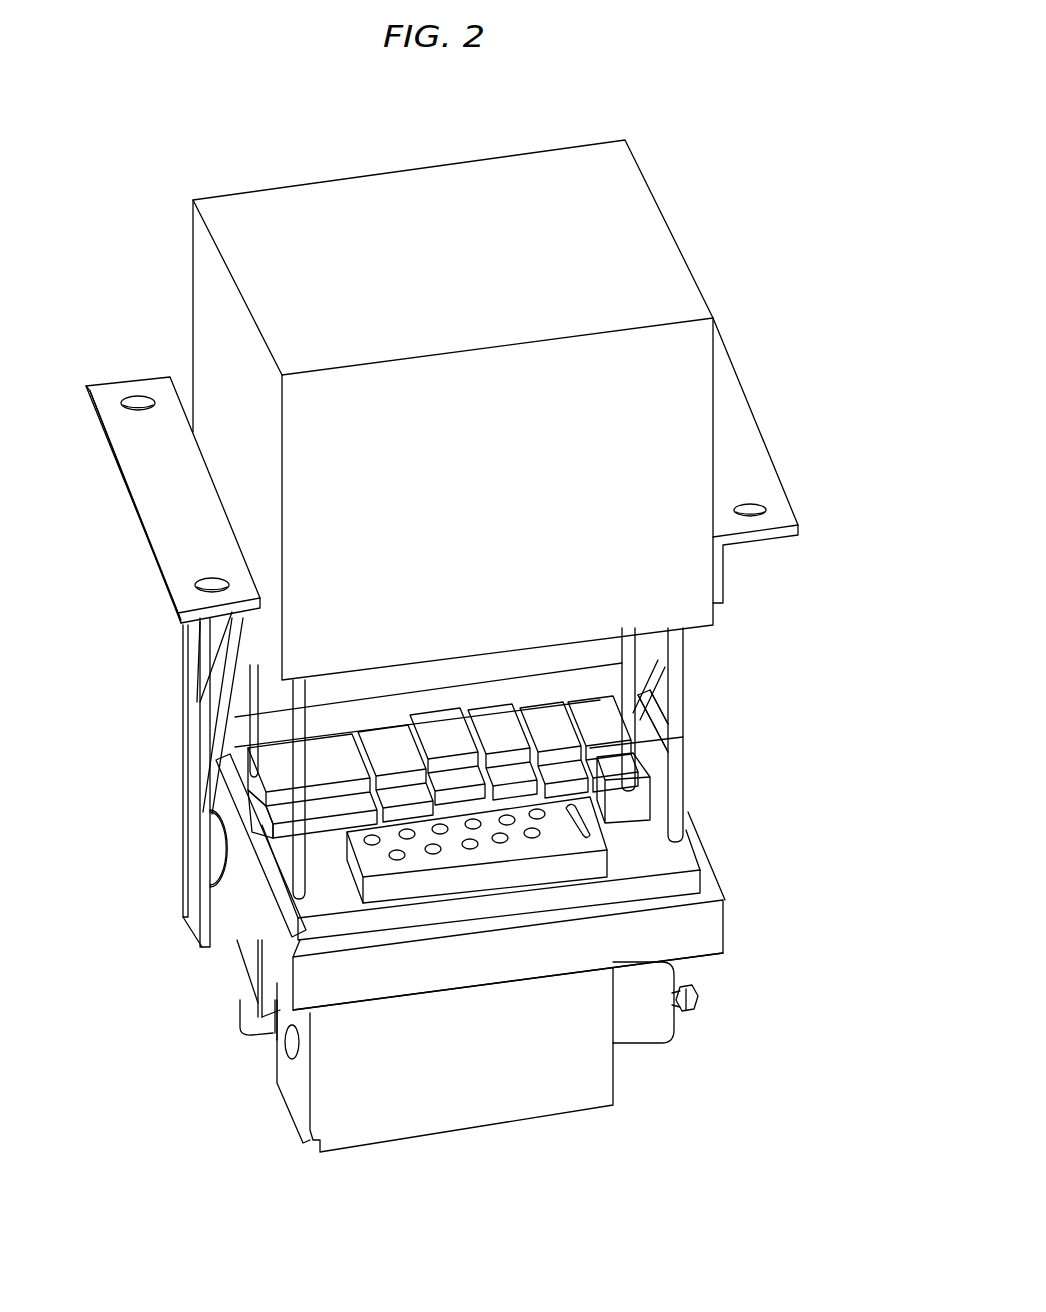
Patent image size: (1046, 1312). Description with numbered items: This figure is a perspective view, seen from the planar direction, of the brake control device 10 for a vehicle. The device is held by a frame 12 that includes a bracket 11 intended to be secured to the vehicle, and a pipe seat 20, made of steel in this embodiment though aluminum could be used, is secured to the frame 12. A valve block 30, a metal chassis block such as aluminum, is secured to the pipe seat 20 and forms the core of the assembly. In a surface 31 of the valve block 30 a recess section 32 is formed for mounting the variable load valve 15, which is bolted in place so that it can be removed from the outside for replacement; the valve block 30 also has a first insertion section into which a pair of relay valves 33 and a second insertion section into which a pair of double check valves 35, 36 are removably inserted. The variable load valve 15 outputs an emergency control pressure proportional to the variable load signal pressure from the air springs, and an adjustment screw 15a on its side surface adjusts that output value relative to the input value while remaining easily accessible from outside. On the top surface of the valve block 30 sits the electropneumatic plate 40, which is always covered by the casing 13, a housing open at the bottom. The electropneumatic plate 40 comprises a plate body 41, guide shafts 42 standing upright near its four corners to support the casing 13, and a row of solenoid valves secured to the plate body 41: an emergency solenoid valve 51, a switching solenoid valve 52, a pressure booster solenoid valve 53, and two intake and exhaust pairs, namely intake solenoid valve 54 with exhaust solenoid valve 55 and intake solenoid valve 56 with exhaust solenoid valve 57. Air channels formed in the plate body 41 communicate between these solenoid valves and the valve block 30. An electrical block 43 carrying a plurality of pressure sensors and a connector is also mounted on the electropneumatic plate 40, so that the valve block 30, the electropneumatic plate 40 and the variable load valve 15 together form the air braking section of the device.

The brake control device 10 is at (744, 236).
The bracket 11 is at (112, 390).
The frame 12 is at (177, 722).
The casing 13 is at (188, 240).
The variable load valve 15 is at (623, 1082).
The adjustment screw 15a is at (695, 1006).
The pipe seat 20 is at (593, 682).
The valve block 30 is at (730, 920).
The surface 31 is at (690, 947).
The recess section 32 is at (258, 975).
The relay valve 33 is at (243, 1018).
The double check valve 35 is at (217, 852).
The double check valve 36 is at (218, 848).
The electropneumatic plate 40 is at (672, 862).
The plate body 41 is at (703, 880).
The guide shaft 42 is at (683, 740).
The electrical block 43 is at (456, 880).
The emergency solenoid valve 51 is at (452, 738).
The switching solenoid valve 52 is at (385, 748).
The pressure booster solenoid valve 53 is at (655, 800).
The intake solenoid valve 54 is at (330, 743).
The exhaust solenoid valve 55 is at (226, 792).
The intake solenoid valve 56 is at (500, 742).
The exhaust solenoid valve 57 is at (560, 745).